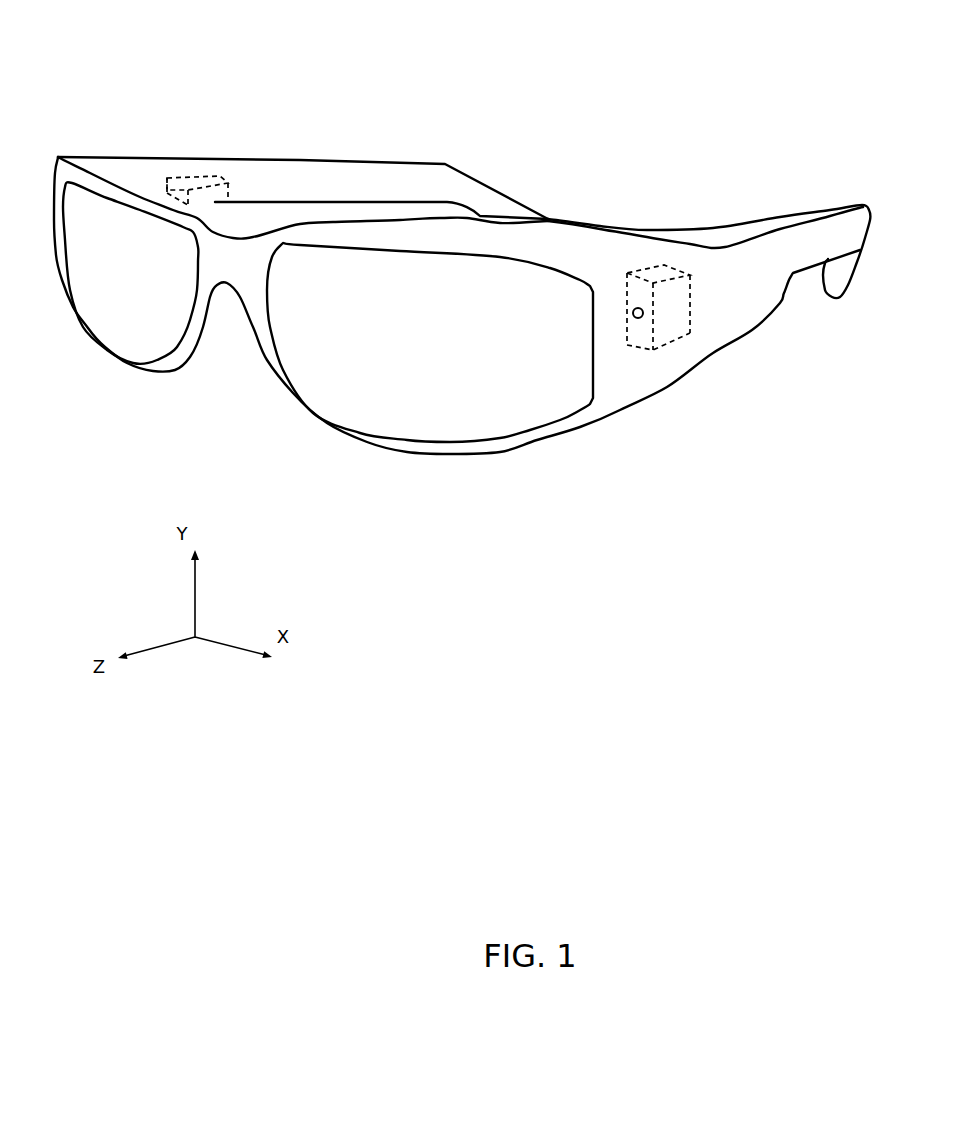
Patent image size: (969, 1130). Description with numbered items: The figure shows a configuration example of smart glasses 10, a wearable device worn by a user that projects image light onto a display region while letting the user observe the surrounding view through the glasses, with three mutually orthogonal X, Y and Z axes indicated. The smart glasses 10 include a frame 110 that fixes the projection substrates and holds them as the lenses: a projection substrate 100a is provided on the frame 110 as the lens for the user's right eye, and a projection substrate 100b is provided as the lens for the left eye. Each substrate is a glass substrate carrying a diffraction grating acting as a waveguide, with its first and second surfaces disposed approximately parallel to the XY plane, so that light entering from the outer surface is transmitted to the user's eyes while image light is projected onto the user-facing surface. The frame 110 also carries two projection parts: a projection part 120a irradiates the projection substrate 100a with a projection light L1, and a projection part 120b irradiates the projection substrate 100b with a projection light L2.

The smart glasses 10 is at (462, 273).
The frame 110 is at (583, 247).
The projection substrate 100a is at (152, 325).
The projection substrate 100b is at (488, 407).
The projection part 120a is at (192, 177).
The projection part 120b is at (665, 347).
The projection light L1 is at (170, 196).
The projection light L2 is at (628, 311).